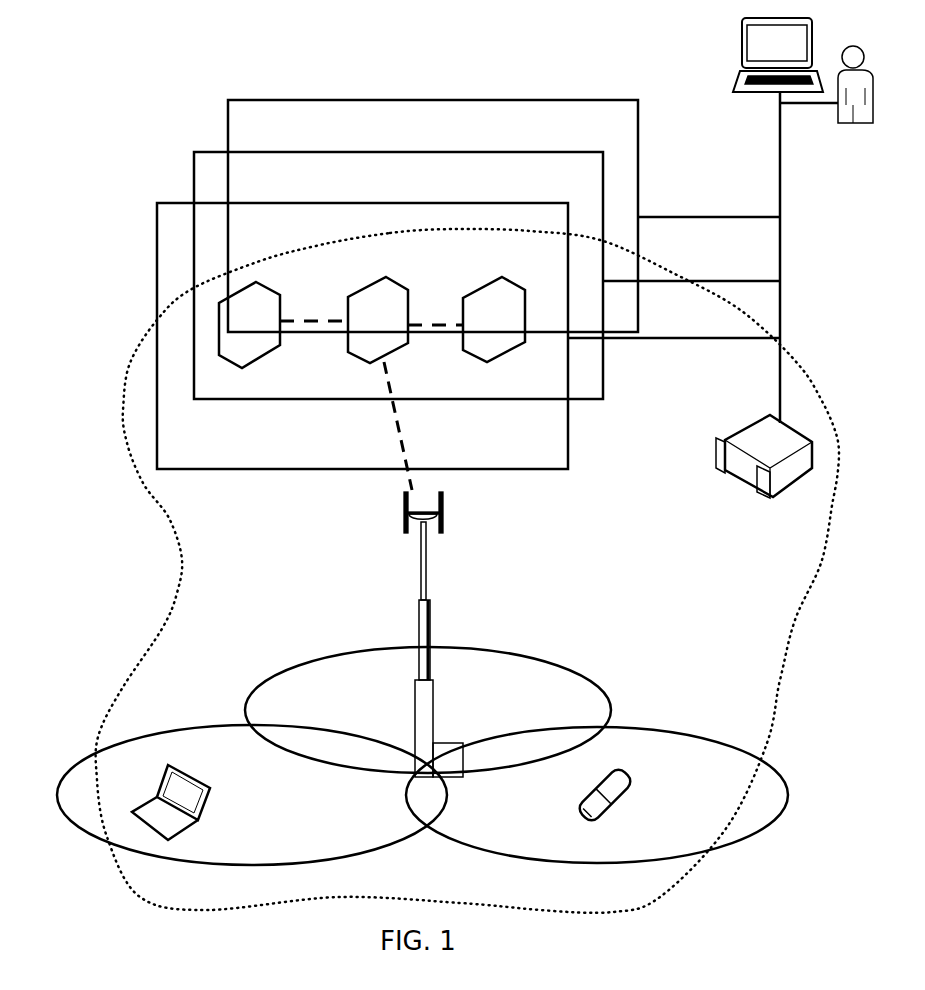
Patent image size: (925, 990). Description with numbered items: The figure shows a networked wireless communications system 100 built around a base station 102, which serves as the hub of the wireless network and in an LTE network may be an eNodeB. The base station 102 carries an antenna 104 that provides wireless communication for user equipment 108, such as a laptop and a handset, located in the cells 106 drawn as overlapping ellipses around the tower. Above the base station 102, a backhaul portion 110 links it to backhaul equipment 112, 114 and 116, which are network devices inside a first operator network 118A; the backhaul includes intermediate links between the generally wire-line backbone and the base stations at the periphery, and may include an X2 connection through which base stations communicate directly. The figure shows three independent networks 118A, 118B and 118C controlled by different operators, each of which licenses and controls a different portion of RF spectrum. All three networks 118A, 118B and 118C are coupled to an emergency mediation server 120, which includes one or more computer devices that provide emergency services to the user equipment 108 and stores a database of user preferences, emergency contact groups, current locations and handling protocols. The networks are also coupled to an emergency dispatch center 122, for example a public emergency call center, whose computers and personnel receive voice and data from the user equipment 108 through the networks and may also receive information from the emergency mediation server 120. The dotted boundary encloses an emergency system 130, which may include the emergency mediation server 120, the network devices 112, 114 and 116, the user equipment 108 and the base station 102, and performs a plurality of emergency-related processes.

The networked wireless communications system 100 is at (118, 36).
The base station 102 is at (415, 727).
The antenna 104 is at (448, 522).
The cell 106 is at (300, 663).
The user equipment 108 is at (200, 786).
The backhaul portion 110 is at (392, 482).
The backhaul equipment 112 is at (227, 358).
The backhaul equipment 114 is at (355, 356).
The backhaul equipment 116 is at (473, 360).
The first operator network 118A is at (157, 240).
The second operator network 118B is at (194, 165).
The third operator network 118C is at (228, 115).
The emergency mediation server 120 is at (740, 430).
The emergency dispatch center 122 is at (740, 48).
The emergency system 130 is at (172, 585).